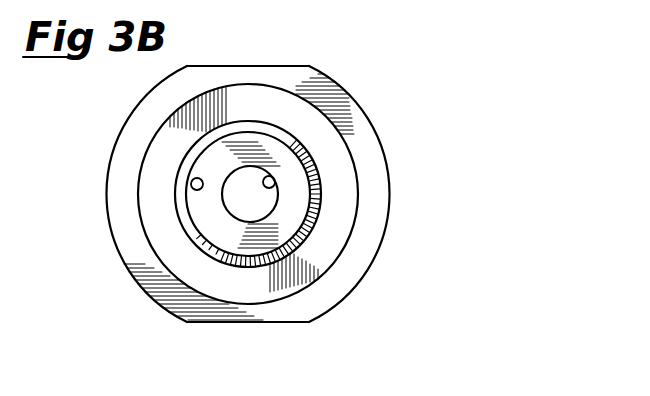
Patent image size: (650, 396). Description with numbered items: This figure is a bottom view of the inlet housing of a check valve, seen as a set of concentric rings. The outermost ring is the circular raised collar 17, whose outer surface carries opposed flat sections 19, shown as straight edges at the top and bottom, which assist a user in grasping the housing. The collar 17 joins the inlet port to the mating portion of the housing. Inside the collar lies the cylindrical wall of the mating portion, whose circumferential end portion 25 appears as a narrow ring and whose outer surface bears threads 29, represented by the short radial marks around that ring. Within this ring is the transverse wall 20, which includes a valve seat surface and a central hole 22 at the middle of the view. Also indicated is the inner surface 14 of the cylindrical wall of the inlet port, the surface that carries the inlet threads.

The inner surface 14 is at (193, 180).
The circular raised collar 17 is at (343, 290).
The opposed flat sections 19 is at (243, 66).
The transverse wall 20 is at (303, 191).
The central hole 22 is at (272, 176).
The circumferential end portion 25 is at (323, 203).
The threads 29 is at (313, 240).